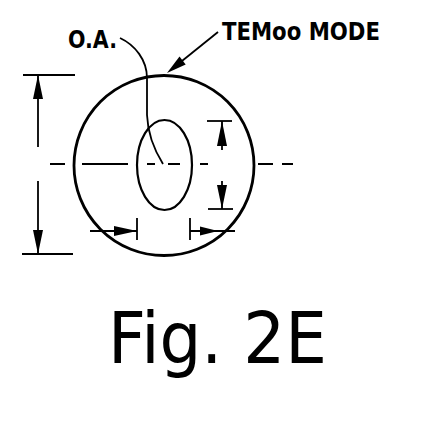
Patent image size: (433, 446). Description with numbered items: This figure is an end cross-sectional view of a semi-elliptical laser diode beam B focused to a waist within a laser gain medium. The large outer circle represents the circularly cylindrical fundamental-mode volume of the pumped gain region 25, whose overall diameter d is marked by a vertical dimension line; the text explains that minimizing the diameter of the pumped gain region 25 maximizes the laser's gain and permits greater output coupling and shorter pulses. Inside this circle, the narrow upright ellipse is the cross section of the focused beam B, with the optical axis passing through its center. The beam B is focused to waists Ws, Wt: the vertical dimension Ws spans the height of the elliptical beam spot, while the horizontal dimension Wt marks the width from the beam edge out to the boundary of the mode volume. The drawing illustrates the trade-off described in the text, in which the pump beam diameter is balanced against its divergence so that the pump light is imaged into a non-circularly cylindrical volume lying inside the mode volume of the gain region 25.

The pumped gain region 25 is at (102, 215).
The beam B is at (205, 108).
The tube inner diameter d is at (48, 164).
The waist Ws is at (226, 165).
The waist Wt is at (180, 232).